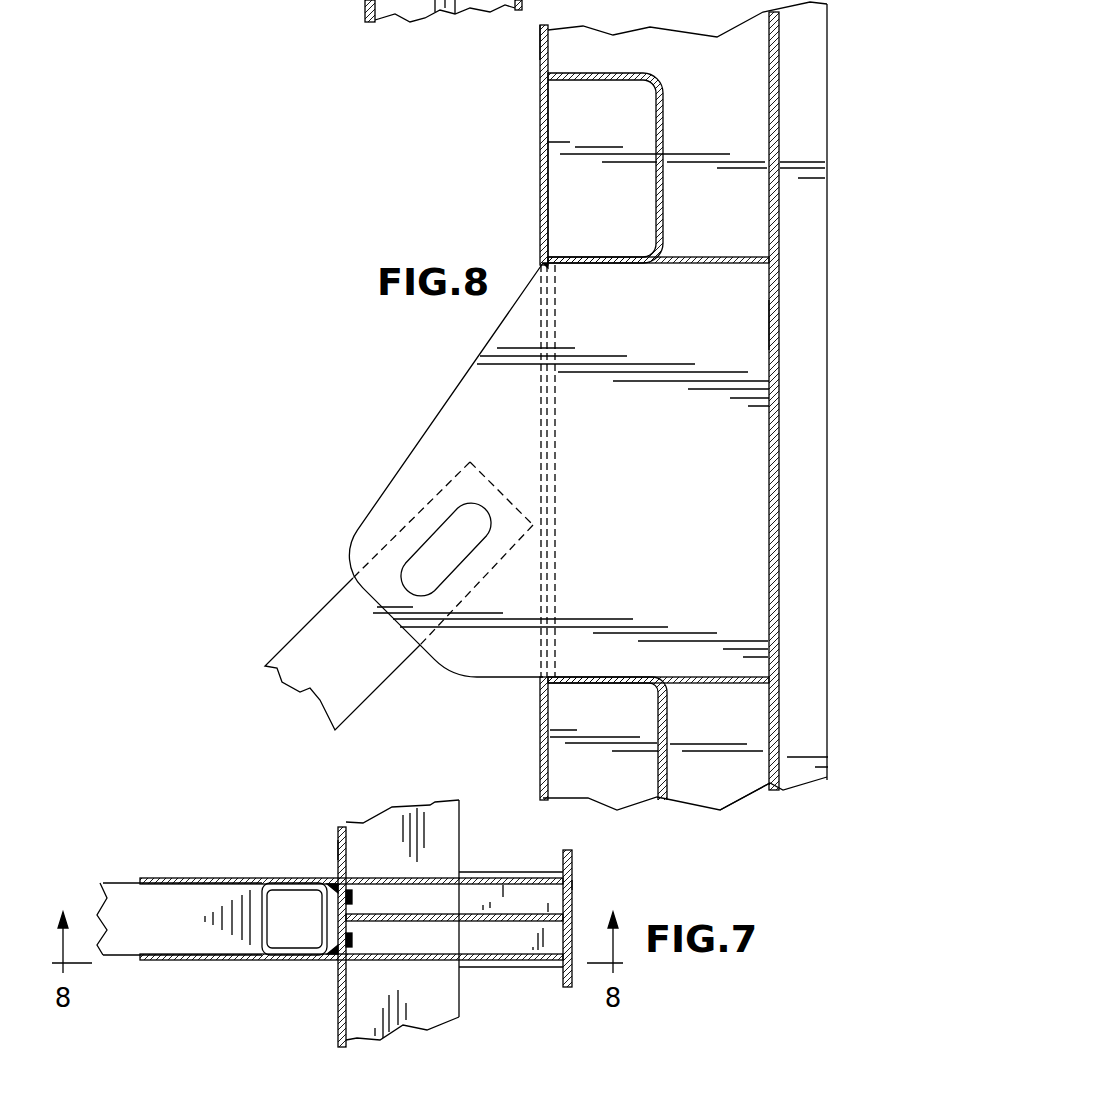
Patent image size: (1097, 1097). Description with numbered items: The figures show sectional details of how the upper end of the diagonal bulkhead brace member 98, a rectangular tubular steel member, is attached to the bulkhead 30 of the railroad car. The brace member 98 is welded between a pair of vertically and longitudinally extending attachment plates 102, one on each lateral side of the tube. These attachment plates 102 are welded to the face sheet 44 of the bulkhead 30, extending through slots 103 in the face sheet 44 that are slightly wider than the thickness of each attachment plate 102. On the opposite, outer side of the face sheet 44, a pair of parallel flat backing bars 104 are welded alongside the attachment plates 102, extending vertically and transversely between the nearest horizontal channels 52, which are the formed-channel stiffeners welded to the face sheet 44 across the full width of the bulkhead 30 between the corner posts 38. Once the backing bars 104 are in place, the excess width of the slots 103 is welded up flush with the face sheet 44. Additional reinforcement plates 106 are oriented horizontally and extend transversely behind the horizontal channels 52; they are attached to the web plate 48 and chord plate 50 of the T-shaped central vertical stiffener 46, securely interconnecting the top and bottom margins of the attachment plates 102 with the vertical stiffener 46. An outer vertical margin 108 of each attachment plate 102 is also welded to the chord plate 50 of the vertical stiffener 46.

In FIG. 8, the bulkhead 30 is at (541, 142).
In FIG. 7, the bulkhead 30 is at (328, 853).
In FIG. 8, the corner post 38 is at (740, 776).
In FIG. 8, the face sheet 44 is at (541, 408).
In FIG. 7, the face sheet 44 is at (338, 1020).
In FIG. 7, the central vertical stiffener 46 is at (568, 988).
In FIG. 7, the web plate 48 is at (548, 903).
In FIG. 8, the chord plate 50 is at (781, 254).
In FIG. 7, the chord plate 50 is at (575, 885).
In FIG. 8, the horizontal stiffener member 52 is at (664, 125).
In FIG. 7, the horizontal stiffener member 52 is at (450, 1012).
In FIG. 8, the diagonal bulkhead brace member 98 is at (437, 542).
In FIG. 7, the diagonal bulkhead brace member 98 is at (118, 945).
In FIG. 8, the attachment plate 102 is at (483, 658).
In FIG. 7, the attachment plate 102 is at (193, 877).
In FIG. 8, the slot 103 is at (539, 266).
In FIG. 7, the slot 103 is at (332, 880).
In FIG. 8, the backing bar 104 is at (556, 446).
In FIG. 7, the backing bar 104 is at (351, 896).
In FIG. 8, the reinforcement plate 106 is at (722, 256).
In FIG. 7, the reinforcement plate 106 is at (502, 875).
In FIG. 8, the outer vertical margin 108 is at (780, 328).